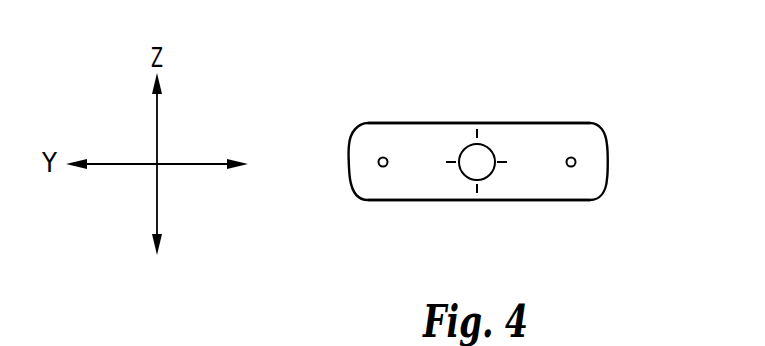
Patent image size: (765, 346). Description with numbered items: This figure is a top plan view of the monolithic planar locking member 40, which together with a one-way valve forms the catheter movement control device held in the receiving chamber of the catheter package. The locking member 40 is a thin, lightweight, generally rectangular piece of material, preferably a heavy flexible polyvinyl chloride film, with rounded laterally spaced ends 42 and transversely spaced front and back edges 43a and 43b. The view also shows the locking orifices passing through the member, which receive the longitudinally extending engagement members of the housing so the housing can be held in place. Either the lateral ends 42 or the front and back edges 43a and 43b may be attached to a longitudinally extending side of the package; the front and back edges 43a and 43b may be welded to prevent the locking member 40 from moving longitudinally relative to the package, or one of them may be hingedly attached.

The monolithic planar locking member 40 is at (622, 76).
The lateral end 42 is at (608, 162).
The front edge 43a is at (527, 200).
The back edge 43b is at (415, 123).